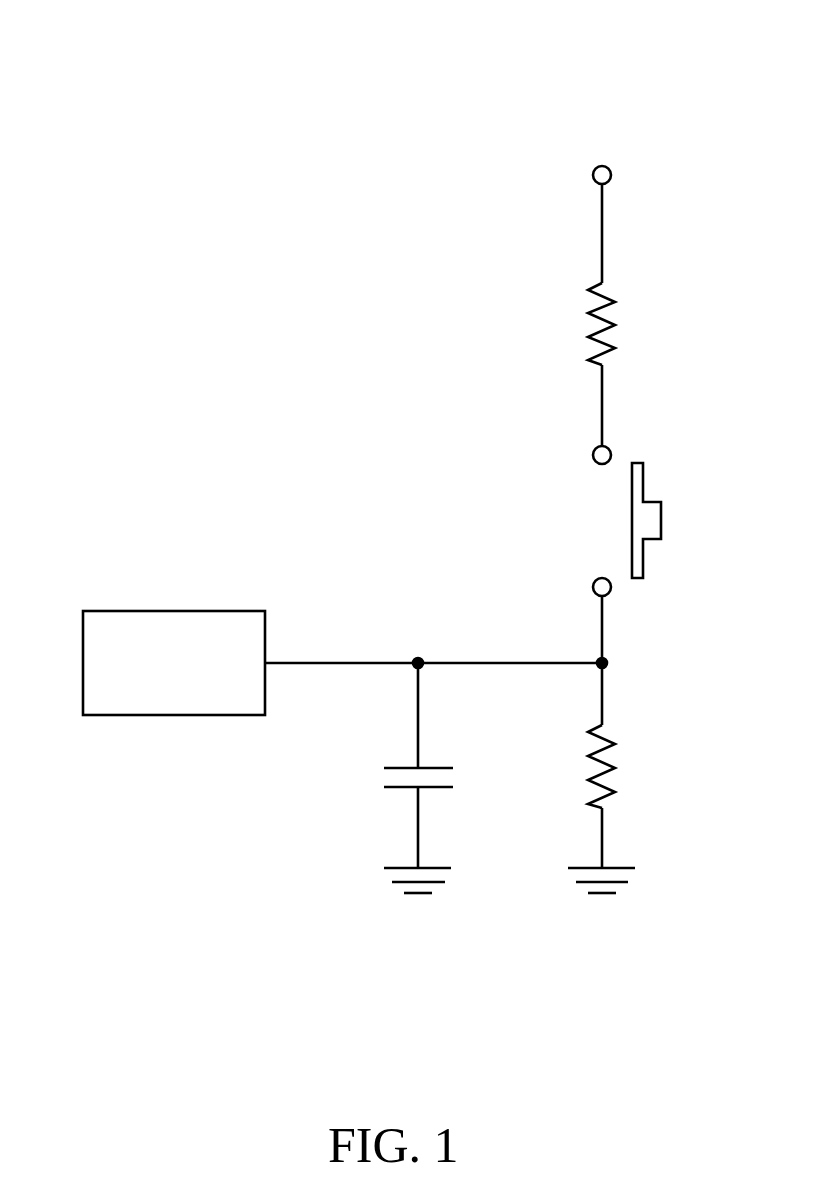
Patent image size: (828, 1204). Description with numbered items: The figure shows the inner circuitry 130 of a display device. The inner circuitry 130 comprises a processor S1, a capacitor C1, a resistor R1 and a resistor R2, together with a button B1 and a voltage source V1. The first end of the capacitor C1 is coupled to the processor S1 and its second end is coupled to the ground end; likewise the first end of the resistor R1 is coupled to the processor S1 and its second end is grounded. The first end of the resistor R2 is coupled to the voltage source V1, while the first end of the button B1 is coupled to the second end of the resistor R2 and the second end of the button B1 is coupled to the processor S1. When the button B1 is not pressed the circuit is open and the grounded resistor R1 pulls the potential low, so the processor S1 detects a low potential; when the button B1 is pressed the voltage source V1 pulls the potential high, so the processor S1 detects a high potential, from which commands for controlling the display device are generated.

The inner circuitry 130 is at (240, 82).
The voltage source V1 is at (602, 156).
The resistor R2 is at (622, 324).
The button B1 is at (652, 521).
The processor S1 is at (174, 663).
The capacitor C1 is at (443, 778).
The resistor R1 is at (615, 778).